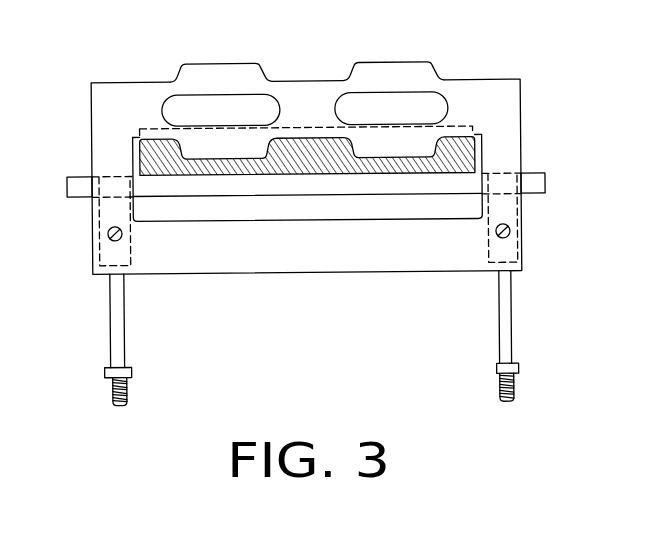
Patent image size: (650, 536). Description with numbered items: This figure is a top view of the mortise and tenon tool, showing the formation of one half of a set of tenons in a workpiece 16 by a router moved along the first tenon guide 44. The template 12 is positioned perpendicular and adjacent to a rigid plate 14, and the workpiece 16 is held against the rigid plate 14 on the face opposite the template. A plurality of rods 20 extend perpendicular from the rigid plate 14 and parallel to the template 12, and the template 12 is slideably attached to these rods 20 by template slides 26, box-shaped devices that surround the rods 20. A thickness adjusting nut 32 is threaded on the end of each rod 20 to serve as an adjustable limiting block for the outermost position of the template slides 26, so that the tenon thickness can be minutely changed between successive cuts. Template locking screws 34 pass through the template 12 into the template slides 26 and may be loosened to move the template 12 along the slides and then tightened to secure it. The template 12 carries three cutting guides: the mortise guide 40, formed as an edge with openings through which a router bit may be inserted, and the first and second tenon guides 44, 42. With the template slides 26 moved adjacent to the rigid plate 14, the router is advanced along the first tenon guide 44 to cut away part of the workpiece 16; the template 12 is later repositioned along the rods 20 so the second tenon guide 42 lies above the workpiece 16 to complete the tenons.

The template 12 is at (502, 109).
The rigid plate 14 is at (532, 185).
The workpiece 16 is at (458, 158).
The rods 20 is at (115, 325).
The template slides 26 is at (130, 248).
The thickness adjusting nut 32 is at (129, 372).
The template locking screws 34 is at (106, 234).
The mortise guide 40 is at (250, 95).
The second tenon guide 42 is at (224, 62).
The first tenon guide 44 is at (261, 148).